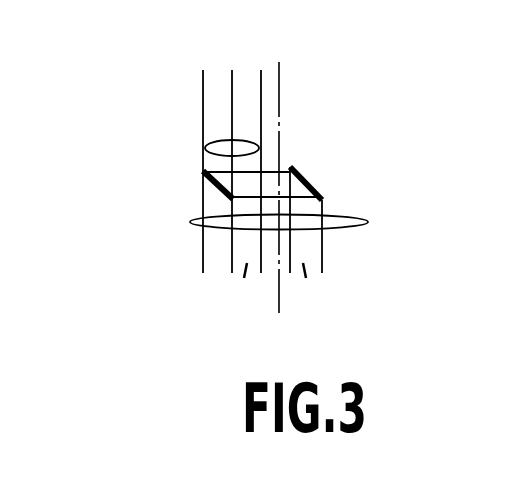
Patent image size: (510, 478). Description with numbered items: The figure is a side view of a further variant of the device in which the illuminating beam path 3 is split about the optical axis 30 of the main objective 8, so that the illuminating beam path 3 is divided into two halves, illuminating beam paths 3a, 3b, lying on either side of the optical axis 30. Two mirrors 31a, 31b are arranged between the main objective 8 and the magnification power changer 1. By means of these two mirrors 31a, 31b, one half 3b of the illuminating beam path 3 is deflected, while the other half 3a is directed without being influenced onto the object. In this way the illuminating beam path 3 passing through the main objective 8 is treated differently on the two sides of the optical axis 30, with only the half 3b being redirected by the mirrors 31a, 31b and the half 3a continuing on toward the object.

The magnification power changer 1 is at (152, 151).
The illuminating beam path 3 is at (202, 87).
The optical axis 30 is at (280, 80).
The mirror 31a is at (205, 183).
The mirror 31b is at (307, 183).
The main objective 8 is at (207, 225).
The half of the illuminating beam path 3a is at (247, 263).
The half of the illuminating beam path 3b is at (305, 263).